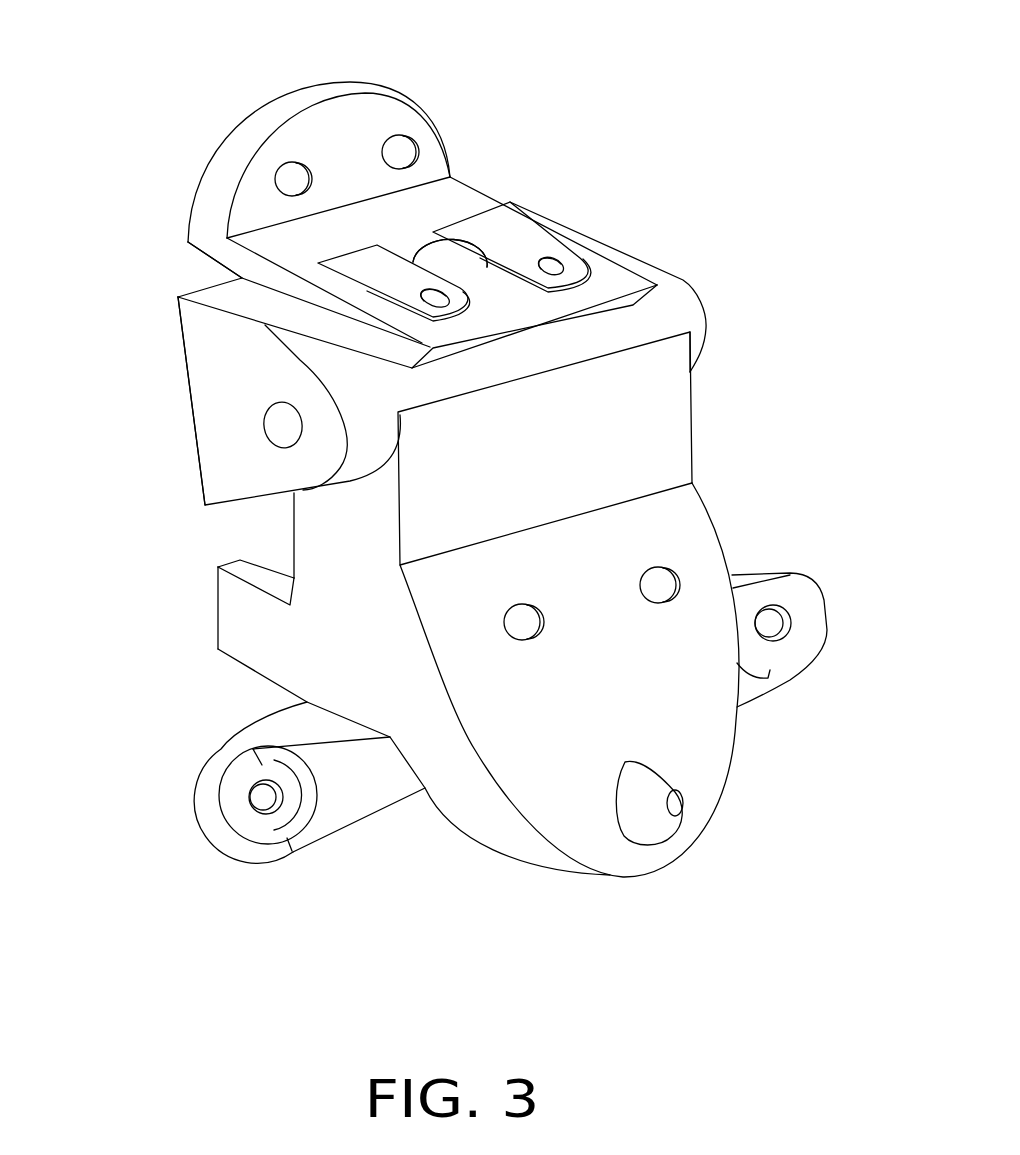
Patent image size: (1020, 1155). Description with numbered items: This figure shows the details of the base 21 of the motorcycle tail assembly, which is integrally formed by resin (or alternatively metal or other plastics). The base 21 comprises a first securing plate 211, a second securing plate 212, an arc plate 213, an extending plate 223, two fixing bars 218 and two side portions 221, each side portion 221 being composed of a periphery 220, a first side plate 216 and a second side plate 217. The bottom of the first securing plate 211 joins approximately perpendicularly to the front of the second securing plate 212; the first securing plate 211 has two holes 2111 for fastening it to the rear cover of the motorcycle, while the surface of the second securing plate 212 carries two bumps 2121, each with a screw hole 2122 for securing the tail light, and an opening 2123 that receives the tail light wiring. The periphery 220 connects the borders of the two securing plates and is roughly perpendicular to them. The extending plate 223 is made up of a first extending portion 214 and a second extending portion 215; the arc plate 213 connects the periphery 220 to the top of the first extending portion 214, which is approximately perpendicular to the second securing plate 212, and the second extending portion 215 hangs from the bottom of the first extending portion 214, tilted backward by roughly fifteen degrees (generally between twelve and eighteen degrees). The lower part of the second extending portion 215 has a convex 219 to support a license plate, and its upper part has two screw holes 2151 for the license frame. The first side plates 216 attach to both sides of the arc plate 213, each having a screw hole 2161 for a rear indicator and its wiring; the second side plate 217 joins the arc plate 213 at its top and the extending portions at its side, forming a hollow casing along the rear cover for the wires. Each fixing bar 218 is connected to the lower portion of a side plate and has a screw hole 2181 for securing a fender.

The base 21 is at (277, 934).
The first securing plate 211 is at (417, 120).
The holes 2111 is at (280, 173).
The second securing plate 212 is at (597, 260).
The bumps 2121 is at (567, 253).
The screw hole 2122 is at (548, 262).
The opening 2123 is at (437, 253).
The arc plate 213 is at (688, 302).
The first extending portion 214 is at (653, 427).
The second extending portion 215 is at (653, 512).
The screw holes 2151 is at (660, 590).
The first side plate 216 is at (210, 402).
The screw hole 2161 is at (285, 428).
The second side plate 217 is at (312, 523).
The fixing bar 218 is at (363, 798).
The screw hole 2181 is at (263, 798).
The convex 219 is at (652, 820).
The periphery 220 is at (235, 258).
The side portion 221 is at (108, 258).
The extending plate 223 is at (780, 388).